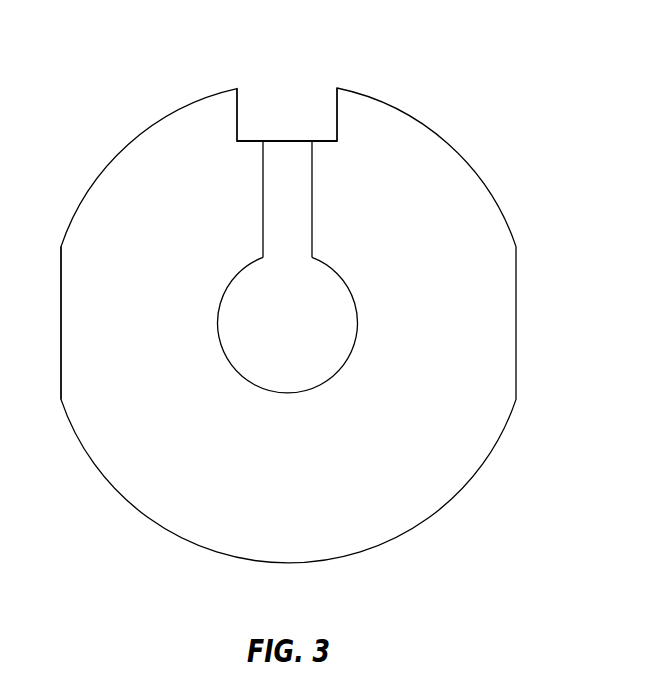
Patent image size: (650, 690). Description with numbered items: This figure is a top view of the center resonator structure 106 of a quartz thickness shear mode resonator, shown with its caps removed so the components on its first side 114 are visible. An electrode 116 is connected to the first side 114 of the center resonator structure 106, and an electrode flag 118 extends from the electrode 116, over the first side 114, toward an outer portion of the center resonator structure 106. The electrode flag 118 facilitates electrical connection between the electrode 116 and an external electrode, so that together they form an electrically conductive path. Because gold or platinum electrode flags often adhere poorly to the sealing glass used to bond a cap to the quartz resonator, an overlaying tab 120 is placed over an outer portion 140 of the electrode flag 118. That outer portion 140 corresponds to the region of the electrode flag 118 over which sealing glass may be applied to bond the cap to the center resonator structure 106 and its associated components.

The center resonator structure 106 is at (465, 160).
The first side 114 is at (181, 474).
The electrode 116 is at (332, 363).
The electrode flag 118 is at (312, 183).
The overlaying tab 120 is at (308, 98).
The outer portion 140 is at (228, 148).